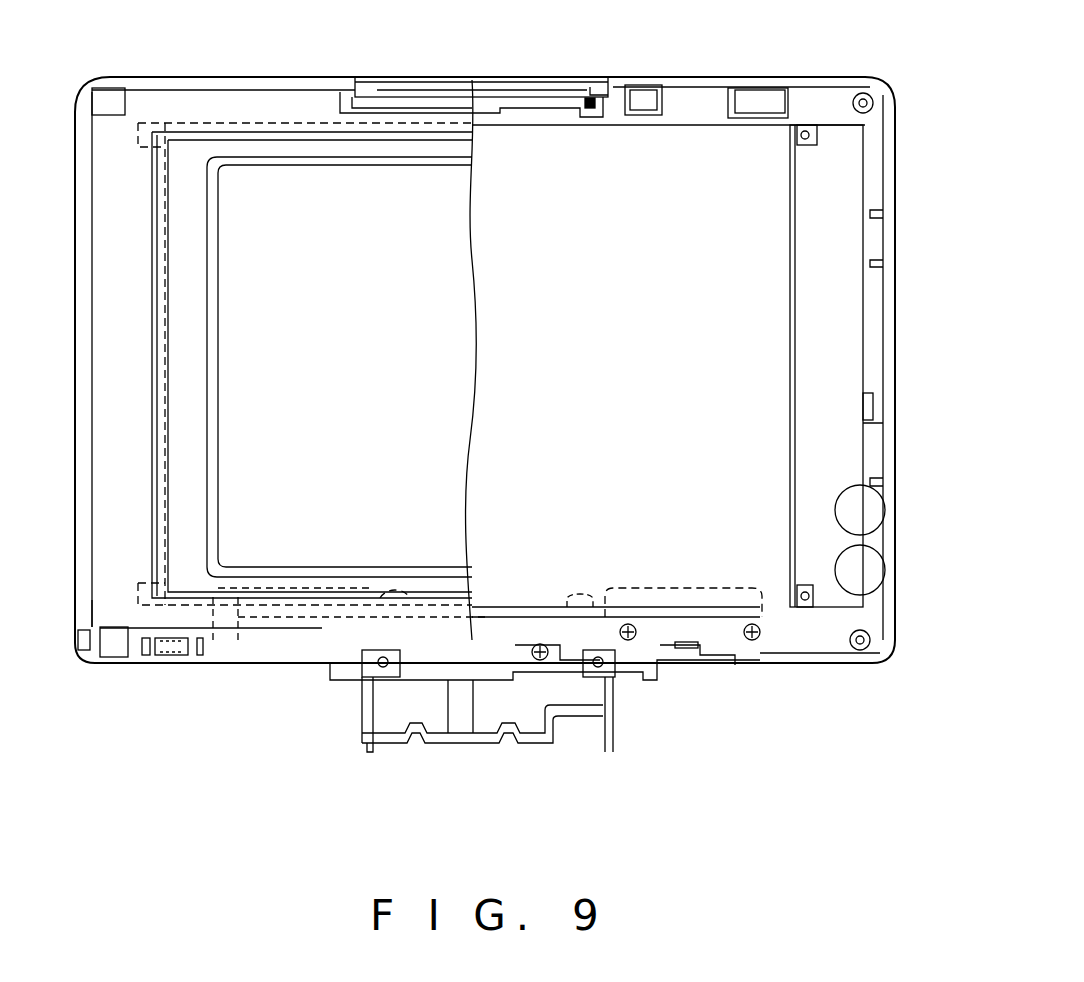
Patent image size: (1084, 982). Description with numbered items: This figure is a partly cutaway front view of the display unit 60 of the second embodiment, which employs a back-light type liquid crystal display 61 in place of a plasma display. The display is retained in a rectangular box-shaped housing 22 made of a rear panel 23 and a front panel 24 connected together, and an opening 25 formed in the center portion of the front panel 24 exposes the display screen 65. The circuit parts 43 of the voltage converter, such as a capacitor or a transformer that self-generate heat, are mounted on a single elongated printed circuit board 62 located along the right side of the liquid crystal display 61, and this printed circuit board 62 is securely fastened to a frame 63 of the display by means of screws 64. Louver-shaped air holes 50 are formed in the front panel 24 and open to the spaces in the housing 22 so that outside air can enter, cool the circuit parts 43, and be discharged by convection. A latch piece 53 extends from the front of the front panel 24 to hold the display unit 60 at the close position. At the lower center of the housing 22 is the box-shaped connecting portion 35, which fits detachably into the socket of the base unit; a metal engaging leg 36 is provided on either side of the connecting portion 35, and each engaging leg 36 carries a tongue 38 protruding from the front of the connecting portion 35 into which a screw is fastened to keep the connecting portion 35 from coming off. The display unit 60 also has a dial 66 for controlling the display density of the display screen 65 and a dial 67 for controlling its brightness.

The display unit 60 is at (316, 70).
The latch piece 53 is at (497, 95).
The frame 63 is at (681, 125).
The housing 22 is at (862, 92).
The screws 64 is at (812, 136).
The circuit parts 43 is at (850, 232).
The liquid crystal display 61 is at (780, 342).
The rear panel 23 is at (877, 378).
The printed circuit board 62 is at (850, 445).
The dial 67 is at (872, 505).
The dial 66 is at (872, 568).
The opening 25 is at (210, 370).
The display screen 65 is at (460, 370).
The front panel 24 is at (125, 520).
The air holes 50 is at (160, 657).
The tongue 38 is at (375, 668).
The engaging leg 36 is at (373, 752).
The connecting portion 35 is at (530, 725).